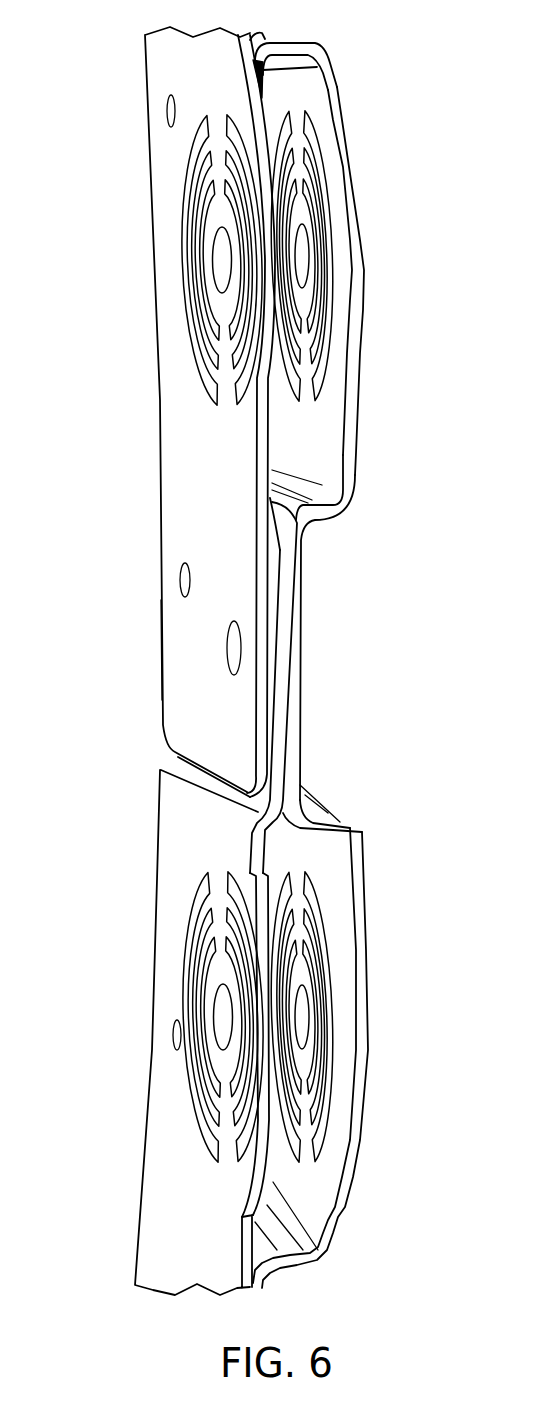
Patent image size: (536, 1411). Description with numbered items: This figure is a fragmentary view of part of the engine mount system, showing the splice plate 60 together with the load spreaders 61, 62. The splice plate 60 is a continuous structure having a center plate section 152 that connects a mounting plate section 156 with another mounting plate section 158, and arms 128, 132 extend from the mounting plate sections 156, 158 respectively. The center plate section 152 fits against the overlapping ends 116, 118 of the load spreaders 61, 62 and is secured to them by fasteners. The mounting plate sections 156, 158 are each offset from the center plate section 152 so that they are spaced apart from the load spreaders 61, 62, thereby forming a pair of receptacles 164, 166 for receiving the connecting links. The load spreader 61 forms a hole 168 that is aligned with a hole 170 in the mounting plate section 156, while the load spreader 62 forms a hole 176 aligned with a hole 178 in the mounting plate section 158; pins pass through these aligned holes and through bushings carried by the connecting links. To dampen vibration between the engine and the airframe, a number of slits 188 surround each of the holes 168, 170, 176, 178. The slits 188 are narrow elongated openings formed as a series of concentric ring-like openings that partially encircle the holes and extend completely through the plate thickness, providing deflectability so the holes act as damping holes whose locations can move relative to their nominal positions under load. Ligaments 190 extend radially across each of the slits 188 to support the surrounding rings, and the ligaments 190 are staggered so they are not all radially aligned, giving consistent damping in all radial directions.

The splice plate 60 is at (335, 654).
The load spreader 61 is at (150, 63).
The load spreader 62 is at (203, 1266).
The overlapping end 116 is at (231, 747).
The overlapping end 118 is at (300, 518).
The arm 128 is at (268, 31).
The arm 132 is at (262, 1276).
The center plate section 152 is at (308, 685).
The mounting plate section 156 is at (350, 473).
The mounting plate section 158 is at (337, 1067).
The receptacle 164 is at (330, 400).
The receptacle 166 is at (340, 853).
The hole 168 is at (228, 258).
The hole 170 is at (291, 238).
The hole 176 is at (227, 1027).
The hole 178 is at (300, 1010).
The slits 188 is at (313, 168).
The ligaments 190 is at (223, 118).